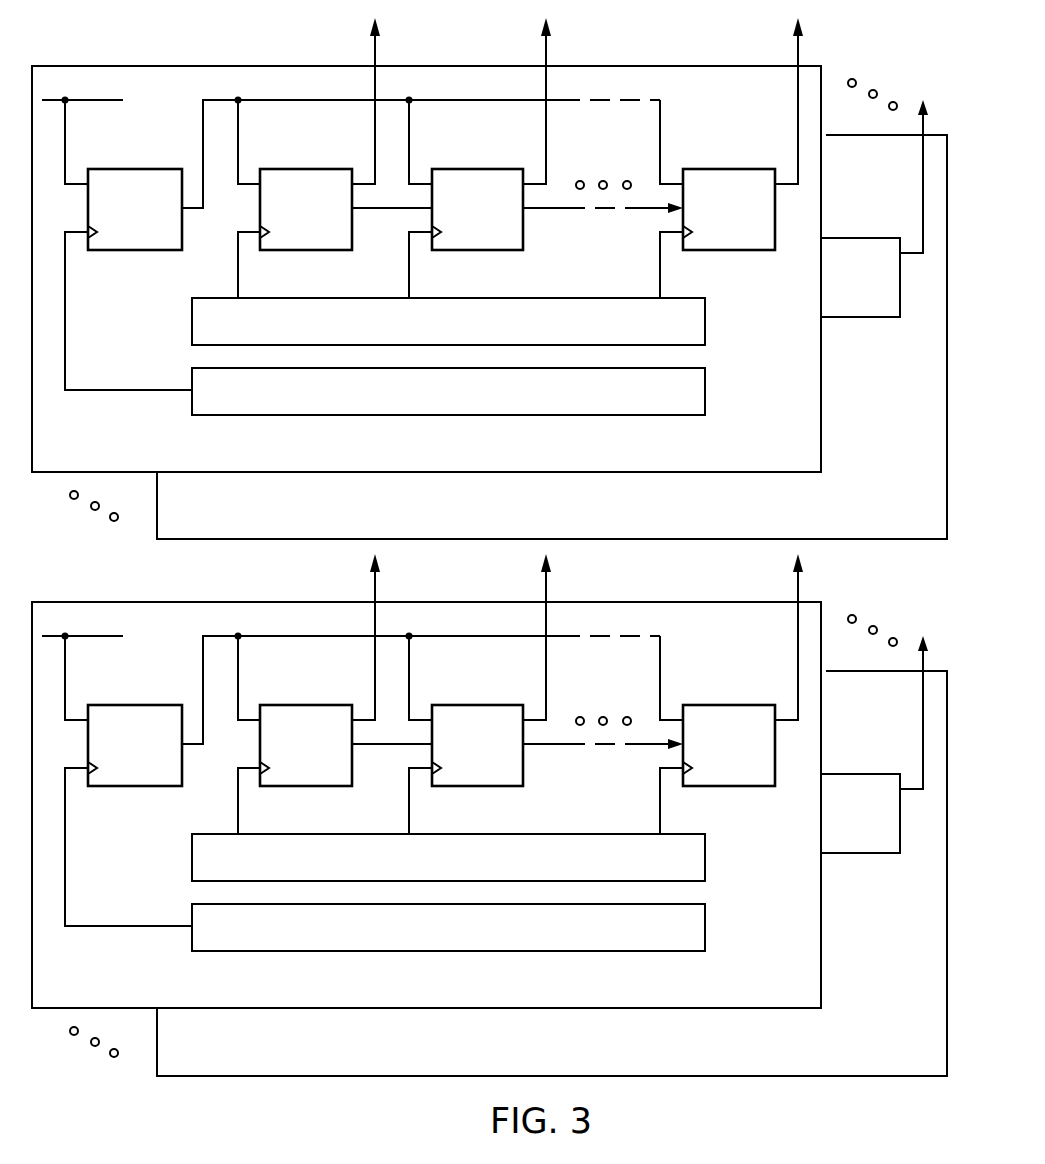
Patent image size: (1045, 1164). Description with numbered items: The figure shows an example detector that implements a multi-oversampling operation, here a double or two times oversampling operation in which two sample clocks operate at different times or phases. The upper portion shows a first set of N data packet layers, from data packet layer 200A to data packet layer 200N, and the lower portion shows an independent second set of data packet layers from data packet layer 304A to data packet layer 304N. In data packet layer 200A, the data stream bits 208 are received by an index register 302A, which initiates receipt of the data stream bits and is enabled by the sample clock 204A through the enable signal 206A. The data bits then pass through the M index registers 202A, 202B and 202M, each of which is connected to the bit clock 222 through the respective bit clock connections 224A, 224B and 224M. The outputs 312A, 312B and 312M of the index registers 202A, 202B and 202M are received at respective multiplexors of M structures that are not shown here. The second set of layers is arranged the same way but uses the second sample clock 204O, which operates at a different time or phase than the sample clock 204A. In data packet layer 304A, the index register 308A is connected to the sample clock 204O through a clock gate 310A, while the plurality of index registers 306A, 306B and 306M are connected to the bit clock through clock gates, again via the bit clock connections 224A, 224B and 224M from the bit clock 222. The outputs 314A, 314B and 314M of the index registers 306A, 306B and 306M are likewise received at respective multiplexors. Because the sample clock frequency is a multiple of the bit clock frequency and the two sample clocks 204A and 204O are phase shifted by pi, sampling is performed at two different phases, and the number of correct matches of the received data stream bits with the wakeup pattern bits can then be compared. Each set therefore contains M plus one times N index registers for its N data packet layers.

The data packet layer 200A is at (467, 455).
The data packet layer 200N is at (577, 521).
The data stream bits 208 is at (77, 102).
The index register 302A is at (118, 251).
The index register 202A is at (305, 168).
The index register 202B is at (477, 168).
The index register 202M is at (728, 168).
The output 312A is at (376, 53).
The output 312B is at (547, 53).
The output 312M is at (799, 53).
The bit clock connection 224A is at (237, 263).
The bit clock connection 224B is at (408, 263).
The bit clock connection 224M is at (659, 263).
The bit clock 222 is at (707, 323).
The sample clock 204A is at (707, 387).
The enable signal 206A is at (128, 392).
The data packet layer 304A is at (426, 805).
The data packet layer 304N is at (508, 845).
The index register 308A is at (128, 773).
The index register 306A is at (306, 718).
The index register 306B is at (477, 718).
The index register 306M is at (729, 718).
The output 314A is at (408, 637).
The output 314B is at (579, 637).
The output 314M is at (831, 637).
The sample clock 204O is at (494, 933).
The clock gate 310A is at (128, 877).